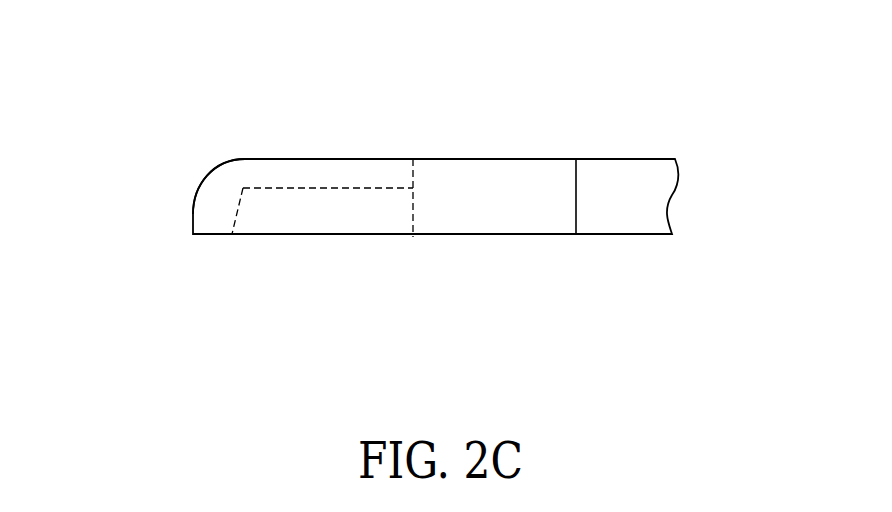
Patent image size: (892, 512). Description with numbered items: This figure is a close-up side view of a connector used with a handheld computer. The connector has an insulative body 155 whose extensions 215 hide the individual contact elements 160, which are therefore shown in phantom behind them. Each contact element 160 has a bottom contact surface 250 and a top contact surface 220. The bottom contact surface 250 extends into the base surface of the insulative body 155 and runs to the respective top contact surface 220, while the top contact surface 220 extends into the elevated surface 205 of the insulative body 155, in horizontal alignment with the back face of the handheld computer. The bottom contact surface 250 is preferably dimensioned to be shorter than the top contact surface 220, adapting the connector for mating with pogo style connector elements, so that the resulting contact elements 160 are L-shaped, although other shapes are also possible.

The insulative body 155 is at (525, 105).
The elevated surface 205 is at (483, 159).
The extensions 215 is at (202, 178).
The top contact surface 220 is at (297, 188).
The bottom contact surface 250 is at (237, 211).
The contact elements 160 is at (305, 222).